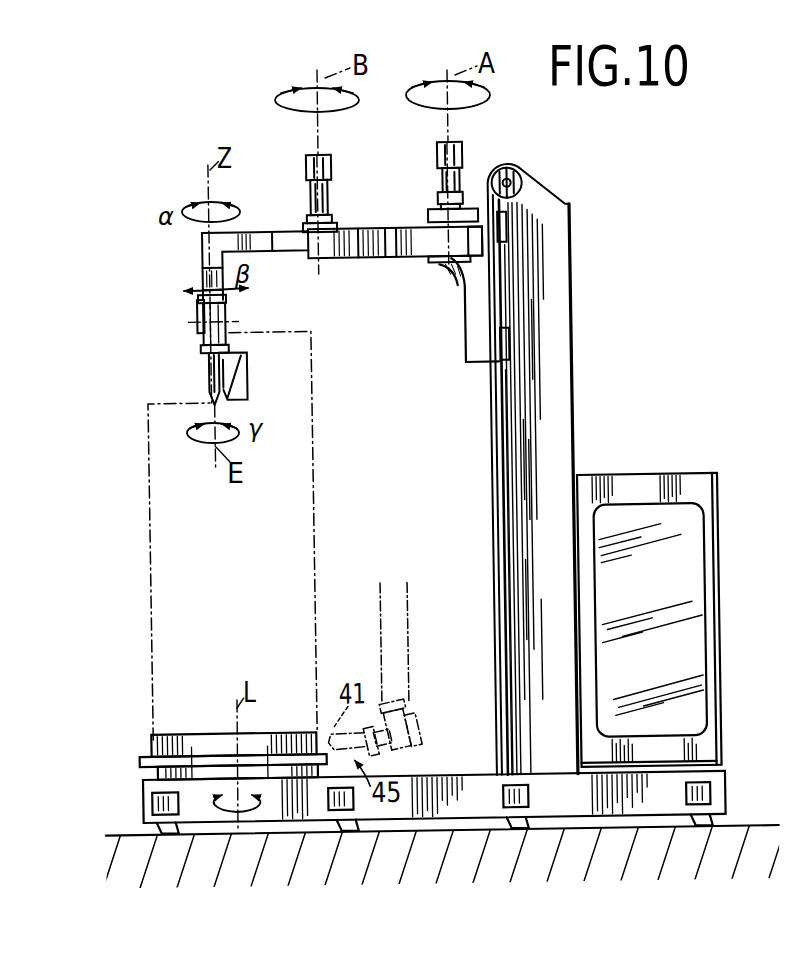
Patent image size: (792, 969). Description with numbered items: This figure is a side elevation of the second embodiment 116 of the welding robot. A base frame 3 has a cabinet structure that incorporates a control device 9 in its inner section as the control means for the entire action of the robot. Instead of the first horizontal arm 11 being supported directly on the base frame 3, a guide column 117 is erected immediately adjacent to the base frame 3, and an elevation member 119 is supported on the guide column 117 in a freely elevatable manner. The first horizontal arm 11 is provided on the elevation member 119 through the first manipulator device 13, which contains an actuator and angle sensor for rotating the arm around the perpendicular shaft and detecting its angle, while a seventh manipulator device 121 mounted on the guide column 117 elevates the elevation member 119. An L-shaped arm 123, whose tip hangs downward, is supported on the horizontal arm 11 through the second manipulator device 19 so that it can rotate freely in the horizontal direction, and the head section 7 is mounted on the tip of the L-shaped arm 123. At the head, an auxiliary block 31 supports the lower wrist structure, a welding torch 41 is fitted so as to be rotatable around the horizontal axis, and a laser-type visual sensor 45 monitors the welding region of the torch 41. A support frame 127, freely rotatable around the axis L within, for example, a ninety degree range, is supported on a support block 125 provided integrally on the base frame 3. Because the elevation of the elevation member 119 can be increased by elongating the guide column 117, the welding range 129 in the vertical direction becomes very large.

The base frame 3 is at (692, 482).
The head section 7 is at (188, 353).
The control device 9 is at (695, 637).
The first horizontal arm 11 is at (412, 233).
The manipulator device 13 is at (462, 160).
The second manipulator device 19 is at (331, 168).
The auxiliary block 31 is at (200, 300).
The welding torch 41 is at (207, 377).
The laser-type visual sensor 45 is at (233, 375).
The second embodiment 116 is at (602, 209).
The guide column 117 is at (560, 337).
The elevation member 119 is at (472, 316).
The seventh manipulator device 121 is at (512, 171).
The L-shaped arm 123 is at (272, 236).
The support block 125 is at (475, 790).
The support frame 127 is at (154, 748).
The welding range 129 is at (148, 430).